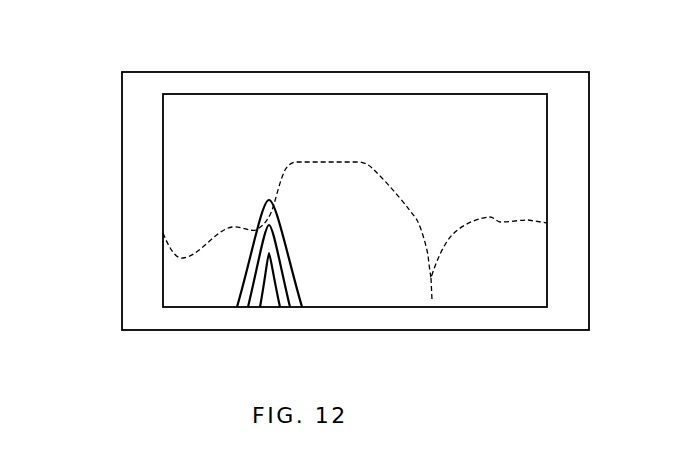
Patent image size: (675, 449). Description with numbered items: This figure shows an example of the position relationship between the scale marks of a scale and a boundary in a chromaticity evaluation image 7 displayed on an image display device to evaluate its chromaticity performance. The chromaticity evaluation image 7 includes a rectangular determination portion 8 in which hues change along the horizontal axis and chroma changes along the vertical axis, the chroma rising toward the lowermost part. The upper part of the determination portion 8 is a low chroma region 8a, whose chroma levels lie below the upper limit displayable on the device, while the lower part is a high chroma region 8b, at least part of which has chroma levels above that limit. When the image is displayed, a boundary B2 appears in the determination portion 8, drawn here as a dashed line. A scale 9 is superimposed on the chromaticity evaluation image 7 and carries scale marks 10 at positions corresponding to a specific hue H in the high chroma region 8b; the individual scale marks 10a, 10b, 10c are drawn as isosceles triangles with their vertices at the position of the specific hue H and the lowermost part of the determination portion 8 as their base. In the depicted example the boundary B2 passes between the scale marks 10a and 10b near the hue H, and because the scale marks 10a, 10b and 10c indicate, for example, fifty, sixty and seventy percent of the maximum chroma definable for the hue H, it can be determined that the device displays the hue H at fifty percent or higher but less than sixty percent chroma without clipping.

The chromaticity evaluation image 7 is at (526, 80).
The determination portion 8 is at (482, 93).
The low chroma region 8a is at (433, 108).
The high chroma region 8b is at (422, 303).
The scale 9 is at (98, 153).
The scale marks 10 is at (314, 250).
The scale mark 10a is at (279, 209).
The scale mark 10b is at (283, 236).
The scale mark 10c is at (283, 271).
The boundary B2 is at (372, 168).
The specific hue H is at (271, 320).